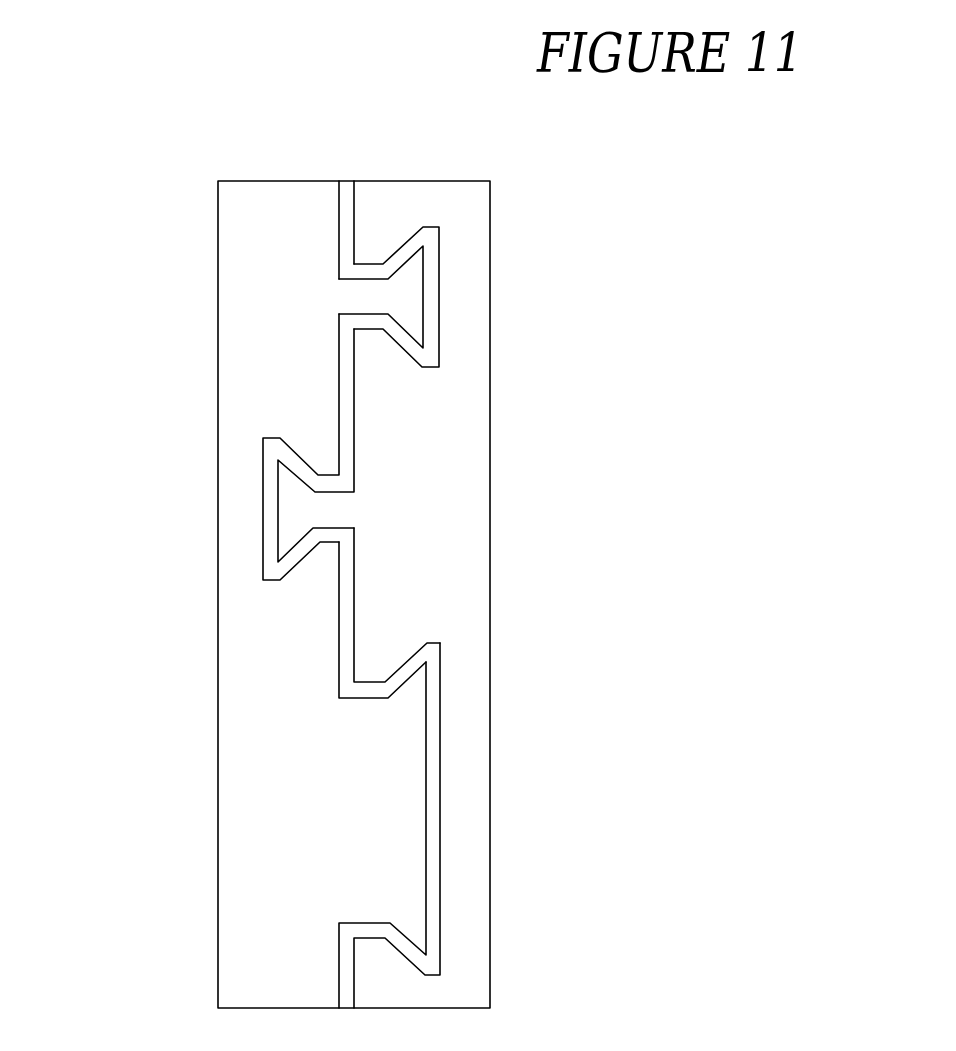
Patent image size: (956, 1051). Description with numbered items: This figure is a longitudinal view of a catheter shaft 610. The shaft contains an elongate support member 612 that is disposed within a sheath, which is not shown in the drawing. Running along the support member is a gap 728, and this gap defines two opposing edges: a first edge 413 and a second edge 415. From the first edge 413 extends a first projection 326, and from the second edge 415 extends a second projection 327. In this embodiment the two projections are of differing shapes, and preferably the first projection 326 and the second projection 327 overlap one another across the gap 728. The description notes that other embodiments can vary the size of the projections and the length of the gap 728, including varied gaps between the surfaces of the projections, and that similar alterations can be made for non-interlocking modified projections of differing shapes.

The catheter shaft 610 is at (557, 520).
The first edge 413 is at (339, 215).
The second edge 415 is at (354, 204).
The elongate support member 612 is at (290, 300).
The second projection 327 is at (280, 508).
The gap 728 is at (345, 615).
The first projection 326 is at (425, 816).